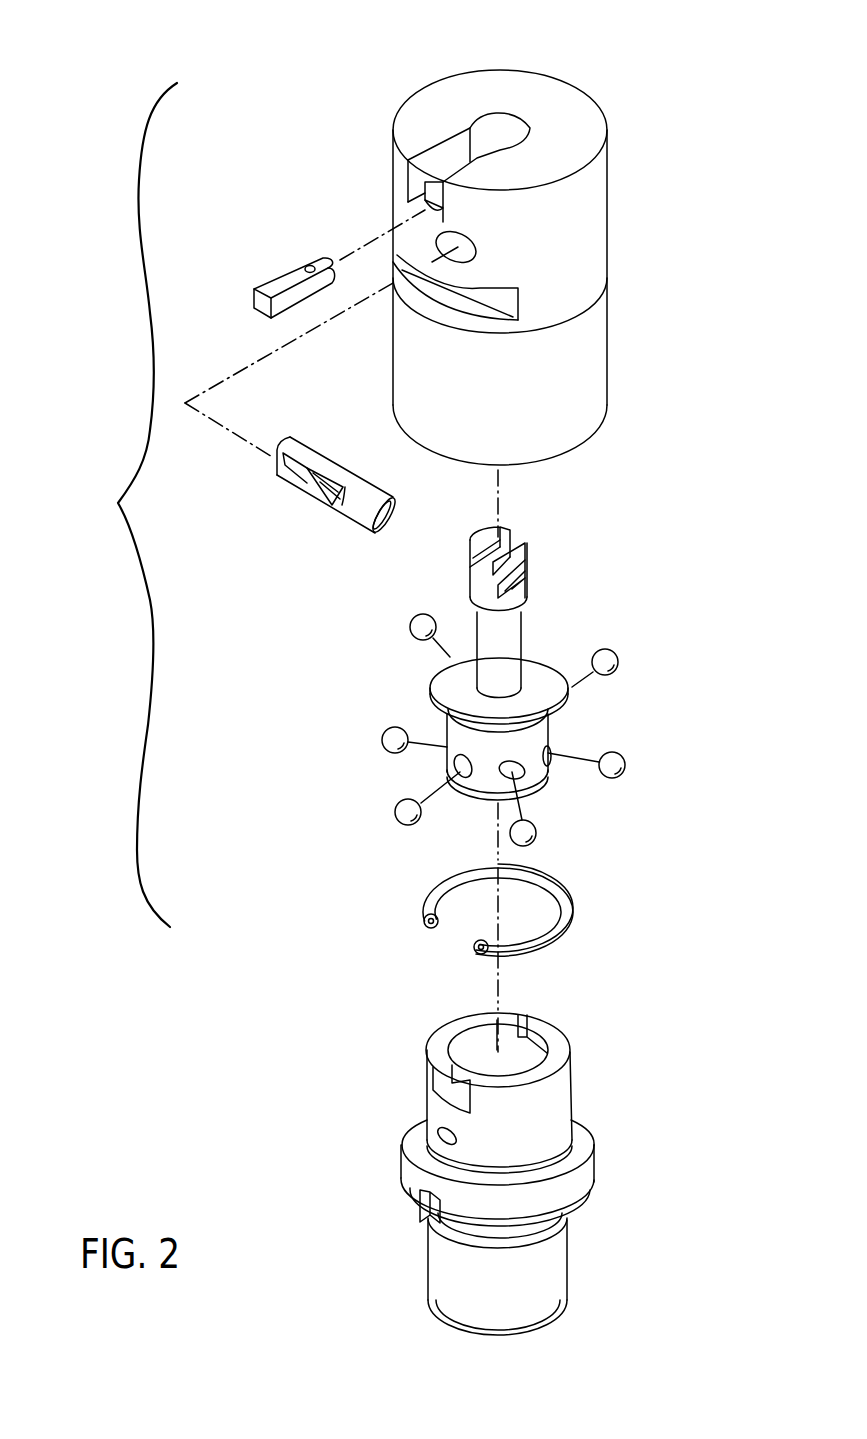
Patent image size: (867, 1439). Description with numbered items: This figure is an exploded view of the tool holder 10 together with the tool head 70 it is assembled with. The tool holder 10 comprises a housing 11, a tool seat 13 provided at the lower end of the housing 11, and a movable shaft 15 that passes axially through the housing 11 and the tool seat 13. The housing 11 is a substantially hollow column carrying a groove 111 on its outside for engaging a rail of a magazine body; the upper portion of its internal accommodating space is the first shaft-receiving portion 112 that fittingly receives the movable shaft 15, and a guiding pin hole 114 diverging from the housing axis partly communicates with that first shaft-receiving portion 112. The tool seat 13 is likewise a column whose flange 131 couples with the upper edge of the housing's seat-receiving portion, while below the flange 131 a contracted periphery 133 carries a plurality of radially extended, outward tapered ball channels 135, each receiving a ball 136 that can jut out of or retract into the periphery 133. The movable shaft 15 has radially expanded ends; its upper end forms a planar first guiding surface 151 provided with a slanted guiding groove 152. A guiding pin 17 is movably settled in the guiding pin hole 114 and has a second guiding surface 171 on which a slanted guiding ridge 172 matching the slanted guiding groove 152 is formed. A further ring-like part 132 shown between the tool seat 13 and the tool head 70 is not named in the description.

The tool holder 10 is at (125, 505).
The housing 11 is at (603, 212).
The groove 111 is at (510, 301).
The first shaft-receiving portion 112 is at (499, 118).
The guiding pin hole 114 is at (467, 250).
The tool seat 13 is at (494, 754).
The flange 131 is at (431, 689).
The retaining ring 132 is at (565, 905).
The contracted periphery 133 is at (543, 773).
The ball channel 135 is at (460, 778).
The ball 136 is at (395, 812).
The movable shaft 15 is at (553, 612).
The first guiding surface 151 is at (527, 557).
The slanted guiding groove 152 is at (528, 578).
The guiding pin 17 is at (321, 513).
The second guiding surface 171 is at (285, 482).
The slanted guiding ridge 172 is at (308, 497).
The tool head 70 is at (582, 1137).